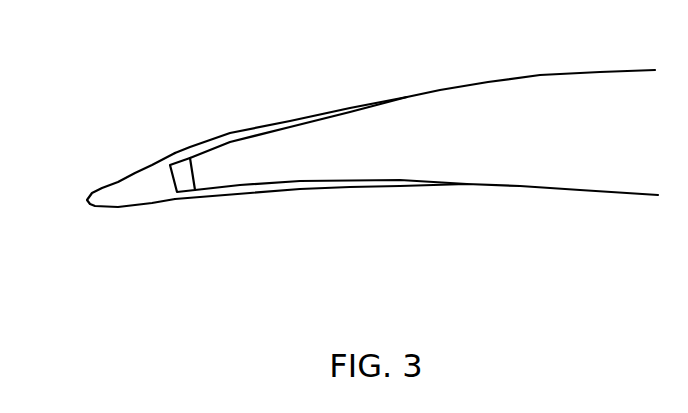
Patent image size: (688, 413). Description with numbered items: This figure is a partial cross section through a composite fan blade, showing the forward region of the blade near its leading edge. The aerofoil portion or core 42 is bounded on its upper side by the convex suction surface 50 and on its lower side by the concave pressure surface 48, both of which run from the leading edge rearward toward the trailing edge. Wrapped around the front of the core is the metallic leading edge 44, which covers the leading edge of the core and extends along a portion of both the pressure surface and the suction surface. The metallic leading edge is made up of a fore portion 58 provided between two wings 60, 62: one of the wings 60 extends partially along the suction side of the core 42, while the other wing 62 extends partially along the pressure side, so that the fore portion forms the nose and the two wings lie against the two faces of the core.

The core 42 is at (342, 150).
The metallic leading edge 44 is at (101, 185).
The concave pressure surface 48 is at (525, 185).
The convex suction surface 50 is at (470, 83).
The fore portion 58 is at (150, 190).
The wing 60 is at (263, 126).
The wing 62 is at (277, 192).